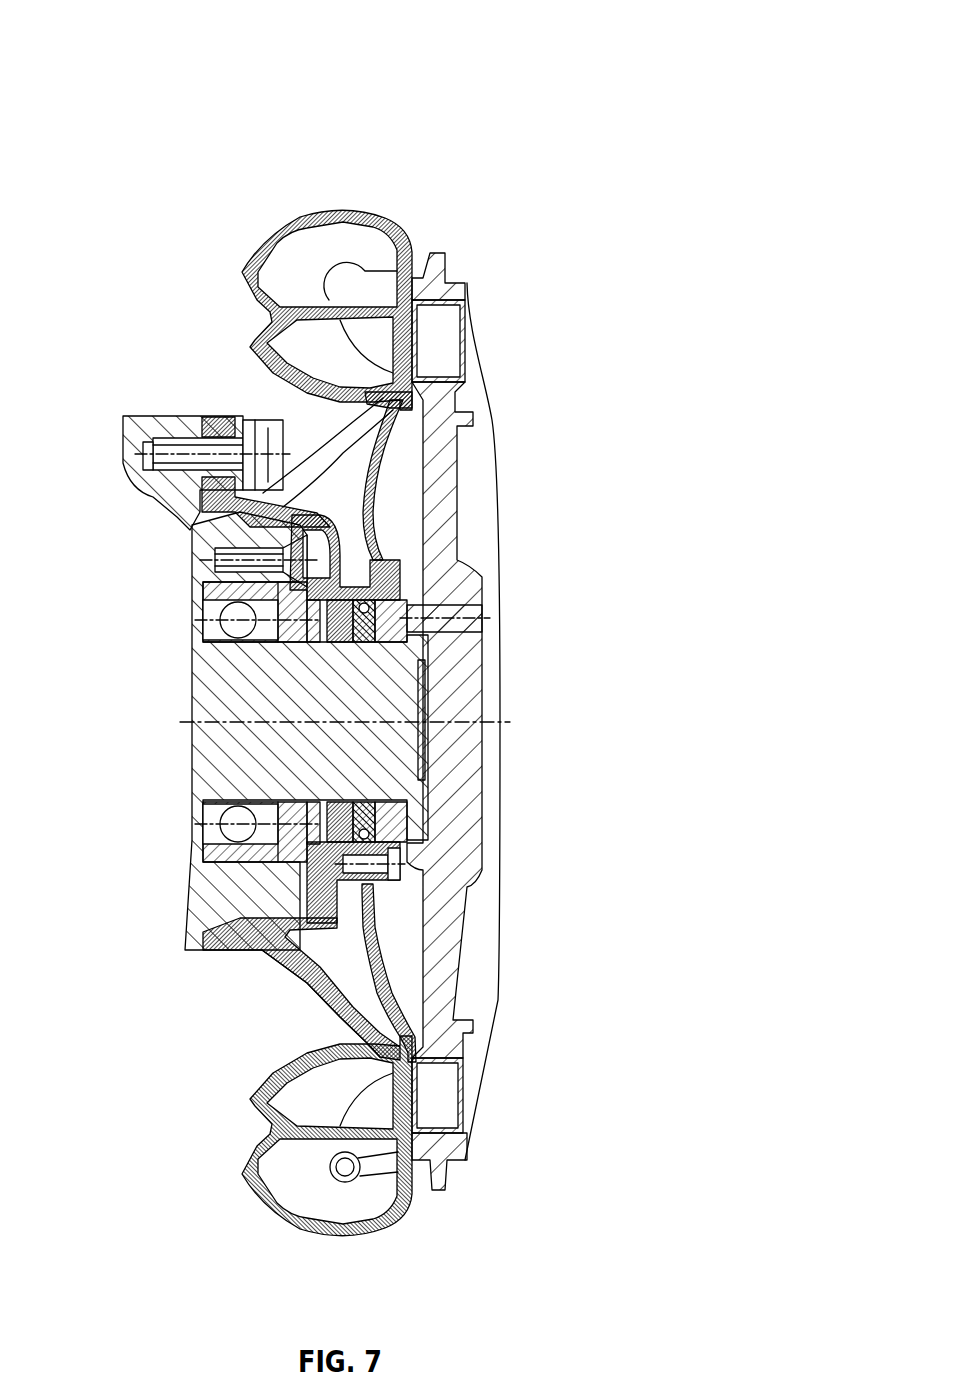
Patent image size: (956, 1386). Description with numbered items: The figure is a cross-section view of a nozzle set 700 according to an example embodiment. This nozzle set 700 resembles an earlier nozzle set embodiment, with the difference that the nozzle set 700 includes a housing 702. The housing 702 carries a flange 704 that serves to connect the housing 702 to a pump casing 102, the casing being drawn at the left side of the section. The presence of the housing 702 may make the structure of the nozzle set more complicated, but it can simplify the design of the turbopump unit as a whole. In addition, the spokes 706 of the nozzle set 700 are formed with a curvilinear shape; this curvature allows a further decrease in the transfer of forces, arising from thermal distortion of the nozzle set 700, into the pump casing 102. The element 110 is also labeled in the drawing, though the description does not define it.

The nozzle set 700 is at (724, 58).
The pump casing 102 is at (138, 433).
The wheel rim 110 is at (373, 965).
The housing 702 is at (313, 523).
The flange 704 is at (225, 488).
The spokes 706 is at (330, 450).